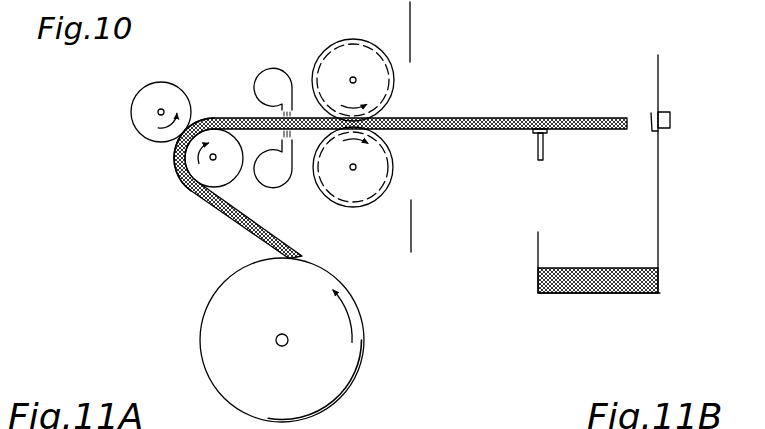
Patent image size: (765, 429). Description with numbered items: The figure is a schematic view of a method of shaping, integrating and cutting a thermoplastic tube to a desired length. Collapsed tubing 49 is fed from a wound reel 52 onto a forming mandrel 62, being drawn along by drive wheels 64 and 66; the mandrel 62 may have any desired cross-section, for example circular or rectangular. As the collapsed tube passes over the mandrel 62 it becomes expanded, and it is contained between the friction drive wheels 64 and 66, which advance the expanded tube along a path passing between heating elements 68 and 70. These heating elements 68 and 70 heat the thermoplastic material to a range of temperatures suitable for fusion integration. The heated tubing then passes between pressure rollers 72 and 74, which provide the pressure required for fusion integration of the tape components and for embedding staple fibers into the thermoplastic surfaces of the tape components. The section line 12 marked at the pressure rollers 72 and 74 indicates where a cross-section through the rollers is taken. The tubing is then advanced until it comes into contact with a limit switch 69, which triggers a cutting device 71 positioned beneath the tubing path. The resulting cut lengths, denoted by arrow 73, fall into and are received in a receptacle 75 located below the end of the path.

The section line 12- 12 is at (412, 17).
The collapsed tubing 49 is at (247, 229).
The wound reel 52 is at (228, 289).
The forming mandrel 62 is at (182, 188).
The drive wheel 64 is at (133, 113).
The drive wheel 66 is at (225, 181).
The heating element 68 is at (283, 69).
The limit switch 69 is at (671, 121).
The heating element 70 is at (280, 186).
The cutting device 71 is at (546, 146).
The pressure roller 72 is at (351, 38).
The cut lengths 73 is at (600, 267).
The pressure roller 74 is at (383, 181).
The receptacle 75 is at (537, 260).